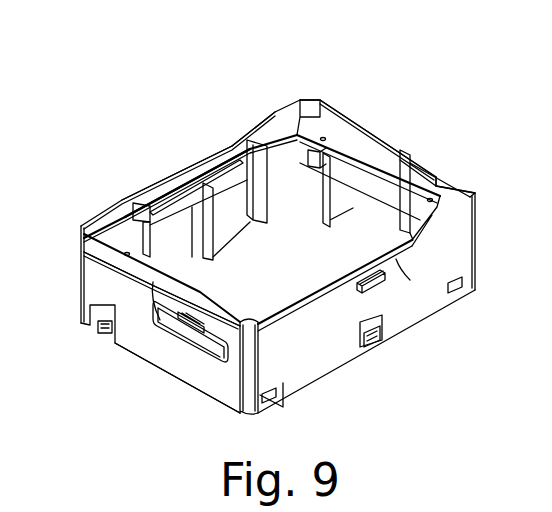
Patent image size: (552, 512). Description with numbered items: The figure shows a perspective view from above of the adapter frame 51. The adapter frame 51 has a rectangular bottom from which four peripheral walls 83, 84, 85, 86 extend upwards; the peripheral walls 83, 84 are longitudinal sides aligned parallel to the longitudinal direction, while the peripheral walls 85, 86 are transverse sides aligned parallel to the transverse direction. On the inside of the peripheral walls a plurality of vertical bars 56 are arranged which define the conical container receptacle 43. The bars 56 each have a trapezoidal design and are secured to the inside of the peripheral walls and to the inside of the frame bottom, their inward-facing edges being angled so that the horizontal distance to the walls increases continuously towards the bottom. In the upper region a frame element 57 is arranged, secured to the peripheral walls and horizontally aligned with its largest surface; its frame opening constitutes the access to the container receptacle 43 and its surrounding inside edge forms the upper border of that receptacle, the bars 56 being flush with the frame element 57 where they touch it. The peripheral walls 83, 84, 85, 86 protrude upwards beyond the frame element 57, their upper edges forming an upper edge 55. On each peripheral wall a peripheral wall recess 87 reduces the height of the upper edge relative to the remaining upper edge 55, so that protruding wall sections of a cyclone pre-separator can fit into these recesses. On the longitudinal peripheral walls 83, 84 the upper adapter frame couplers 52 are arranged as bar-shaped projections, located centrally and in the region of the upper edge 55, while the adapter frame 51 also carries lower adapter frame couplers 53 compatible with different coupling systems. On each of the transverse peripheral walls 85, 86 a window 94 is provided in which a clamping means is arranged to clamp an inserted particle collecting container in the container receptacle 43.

The container receptacle 43 is at (188, 182).
The adapter frame 51 is at (486, 231).
The upper adapter frame coupler 52 is at (180, 183).
The lower adapter frame coupler 53 is at (100, 330).
The upper edge 55 is at (463, 182).
The vertical bar 56 is at (258, 205).
The frame element 57 is at (316, 130).
The adapter frame peripheral wall 83 is at (343, 353).
The adapter frame peripheral wall 84 is at (226, 141).
The adapter frame peripheral wall 85 is at (207, 383).
The adapter frame peripheral wall 86 is at (434, 162).
The peripheral wall recess 87 is at (233, 212).
The window 94 is at (188, 333).